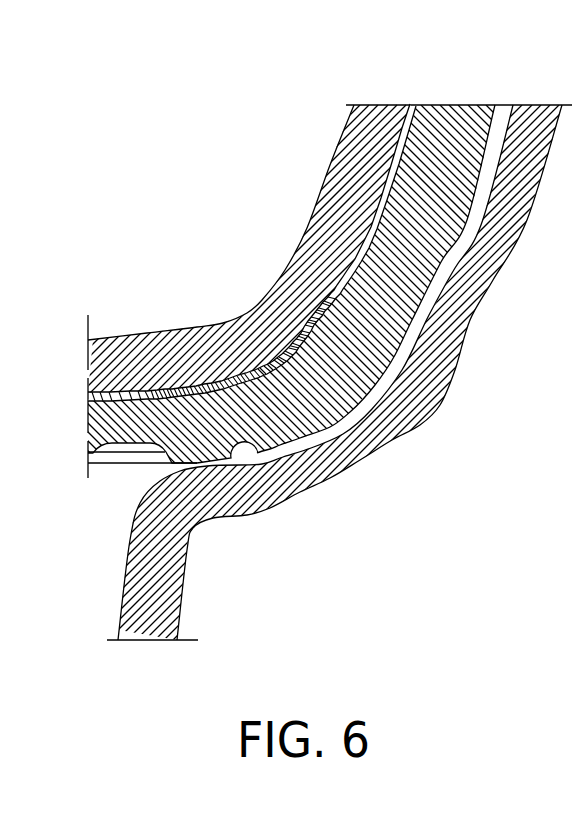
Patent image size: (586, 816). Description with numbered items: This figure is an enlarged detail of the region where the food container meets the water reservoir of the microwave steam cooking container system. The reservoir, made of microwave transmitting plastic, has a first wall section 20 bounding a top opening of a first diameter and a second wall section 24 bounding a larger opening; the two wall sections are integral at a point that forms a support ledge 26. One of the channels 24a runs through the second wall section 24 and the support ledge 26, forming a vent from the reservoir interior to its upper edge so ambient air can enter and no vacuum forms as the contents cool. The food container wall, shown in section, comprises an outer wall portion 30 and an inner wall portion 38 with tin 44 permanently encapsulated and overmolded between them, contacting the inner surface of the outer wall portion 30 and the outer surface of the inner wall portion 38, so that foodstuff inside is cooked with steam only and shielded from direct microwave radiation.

The first wall section 20 is at (157, 613).
The second wall section 24 is at (392, 437).
The channel 24a is at (502, 108).
The support ledge 26 is at (259, 453).
The outer wall portion 30 is at (452, 120).
The inner wall portion 38 is at (340, 190).
The tin 44 is at (340, 282).